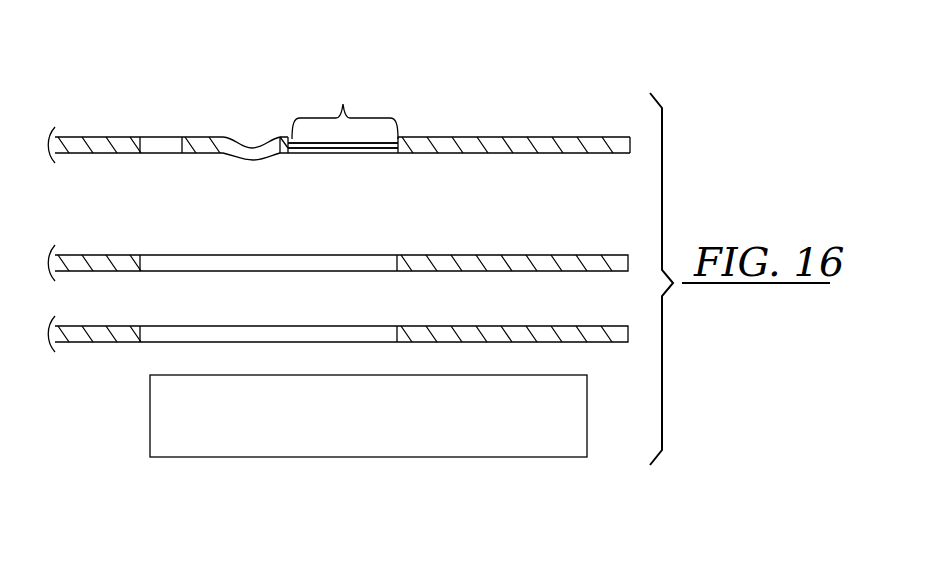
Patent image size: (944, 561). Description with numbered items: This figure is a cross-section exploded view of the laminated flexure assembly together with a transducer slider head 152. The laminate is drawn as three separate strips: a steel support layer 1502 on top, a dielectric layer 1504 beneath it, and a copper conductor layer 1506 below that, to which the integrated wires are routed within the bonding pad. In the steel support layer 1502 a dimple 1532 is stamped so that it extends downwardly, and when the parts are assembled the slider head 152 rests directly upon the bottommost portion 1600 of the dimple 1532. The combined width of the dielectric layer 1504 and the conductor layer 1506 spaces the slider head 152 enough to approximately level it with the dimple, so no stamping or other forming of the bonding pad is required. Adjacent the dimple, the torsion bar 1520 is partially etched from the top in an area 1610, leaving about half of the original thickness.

The steel support layer 1502 is at (561, 143).
The dielectric layer 1504 is at (553, 264).
The copper conductor layer 1506 is at (553, 335).
The torsion bar 1520 is at (340, 155).
The dimple 1532 is at (252, 146).
The bottommost portion of the dimple 1600 is at (253, 161).
The partially etched area 1610 is at (345, 106).
The slider head 152 is at (561, 425).